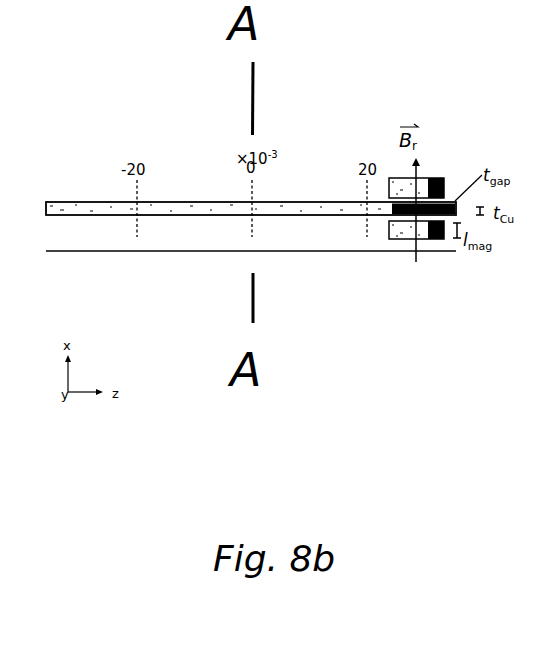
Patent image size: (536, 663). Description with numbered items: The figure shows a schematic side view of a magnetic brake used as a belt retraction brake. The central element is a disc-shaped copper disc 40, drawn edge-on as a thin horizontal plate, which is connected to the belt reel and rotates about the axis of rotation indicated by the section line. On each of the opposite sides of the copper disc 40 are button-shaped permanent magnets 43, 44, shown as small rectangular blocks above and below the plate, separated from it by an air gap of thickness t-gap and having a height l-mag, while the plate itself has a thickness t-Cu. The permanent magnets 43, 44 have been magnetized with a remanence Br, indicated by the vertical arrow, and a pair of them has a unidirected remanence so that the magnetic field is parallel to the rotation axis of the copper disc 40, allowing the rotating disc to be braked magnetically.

The copper disc 40 is at (308, 202).
The permanent magnet 43 is at (430, 182).
The permanent magnet 44 is at (436, 239).